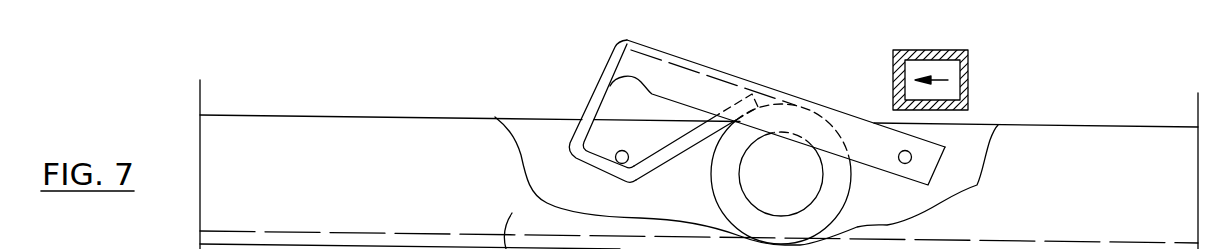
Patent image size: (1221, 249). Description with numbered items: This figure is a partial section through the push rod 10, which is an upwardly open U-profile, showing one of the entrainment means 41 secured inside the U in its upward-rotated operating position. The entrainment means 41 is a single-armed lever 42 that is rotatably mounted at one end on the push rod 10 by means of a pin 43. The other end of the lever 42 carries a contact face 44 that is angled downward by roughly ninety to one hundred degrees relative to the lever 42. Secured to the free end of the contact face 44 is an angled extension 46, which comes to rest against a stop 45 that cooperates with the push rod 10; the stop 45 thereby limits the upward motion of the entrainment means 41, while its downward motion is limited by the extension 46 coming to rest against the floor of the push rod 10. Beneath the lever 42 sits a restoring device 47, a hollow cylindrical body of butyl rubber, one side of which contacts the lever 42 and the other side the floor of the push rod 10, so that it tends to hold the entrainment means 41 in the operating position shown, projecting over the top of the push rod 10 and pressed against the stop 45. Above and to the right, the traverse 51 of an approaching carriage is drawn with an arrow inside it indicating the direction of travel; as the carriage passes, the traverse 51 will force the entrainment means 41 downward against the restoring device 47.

The push rod 10 is at (1055, 147).
The entrainment means 41 is at (779, 90).
The single-armed lever 42 is at (848, 133).
The pin 43 is at (911, 158).
The contact face 44 is at (590, 97).
The stop 45 is at (621, 151).
The angled extension 46 is at (673, 147).
The restoring device 47 is at (829, 190).
The traverse 51 is at (969, 60).